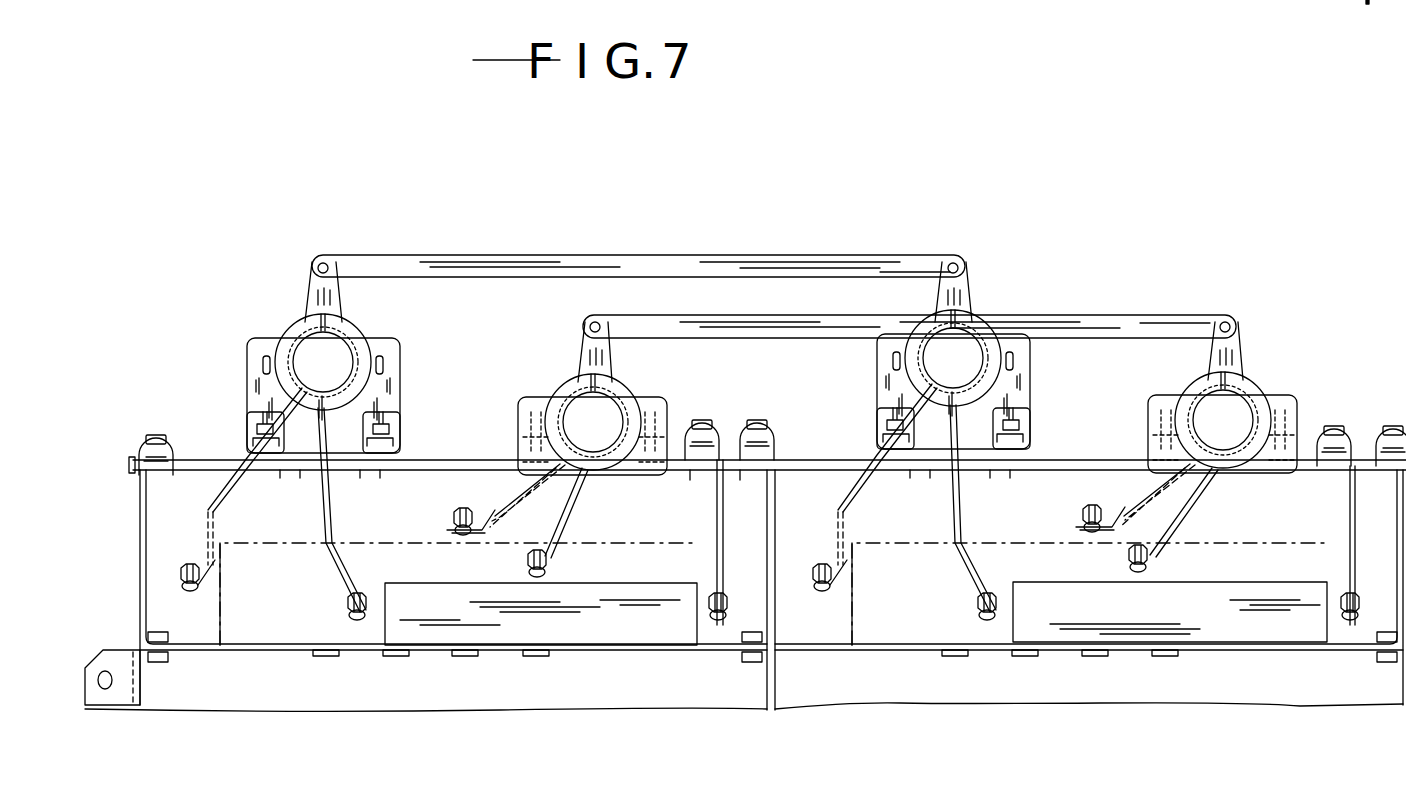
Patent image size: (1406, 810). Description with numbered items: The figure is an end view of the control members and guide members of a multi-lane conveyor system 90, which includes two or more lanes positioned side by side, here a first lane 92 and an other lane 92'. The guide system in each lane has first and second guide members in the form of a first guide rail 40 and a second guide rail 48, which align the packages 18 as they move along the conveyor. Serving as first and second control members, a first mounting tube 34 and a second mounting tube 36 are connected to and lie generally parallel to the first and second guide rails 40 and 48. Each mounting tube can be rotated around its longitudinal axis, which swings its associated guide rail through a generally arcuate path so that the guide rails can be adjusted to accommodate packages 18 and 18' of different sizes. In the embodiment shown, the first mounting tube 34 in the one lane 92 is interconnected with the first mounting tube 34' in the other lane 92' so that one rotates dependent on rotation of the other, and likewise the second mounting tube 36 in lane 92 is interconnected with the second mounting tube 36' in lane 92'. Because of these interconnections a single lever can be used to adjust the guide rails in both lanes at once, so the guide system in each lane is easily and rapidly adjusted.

The multi-lane conveyor system 90 is at (763, 278).
The first mounting tube 34 is at (342, 370).
The first mounting tube of the other lane 34' is at (977, 348).
The second mounting tube 36 is at (618, 419).
The second mounting tube of the other lane 36' is at (1241, 396).
The first guide rail 40 is at (223, 577).
The second guide rail 48 is at (458, 540).
The package 18 is at (856, 669).
The package of different size 18' is at (773, 647).
The lane 92 is at (487, 768).
The other lane 92' is at (1154, 739).